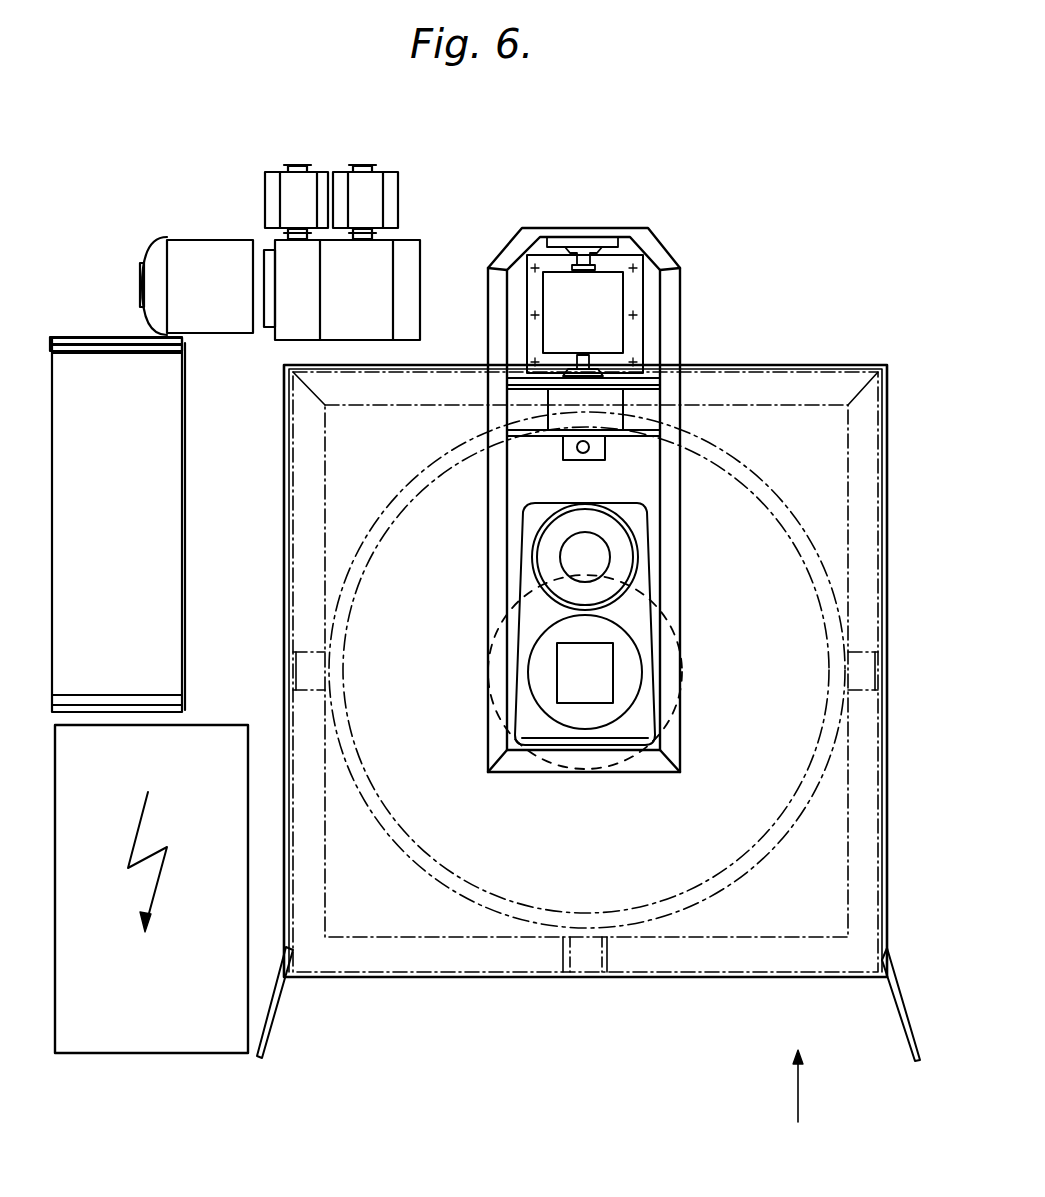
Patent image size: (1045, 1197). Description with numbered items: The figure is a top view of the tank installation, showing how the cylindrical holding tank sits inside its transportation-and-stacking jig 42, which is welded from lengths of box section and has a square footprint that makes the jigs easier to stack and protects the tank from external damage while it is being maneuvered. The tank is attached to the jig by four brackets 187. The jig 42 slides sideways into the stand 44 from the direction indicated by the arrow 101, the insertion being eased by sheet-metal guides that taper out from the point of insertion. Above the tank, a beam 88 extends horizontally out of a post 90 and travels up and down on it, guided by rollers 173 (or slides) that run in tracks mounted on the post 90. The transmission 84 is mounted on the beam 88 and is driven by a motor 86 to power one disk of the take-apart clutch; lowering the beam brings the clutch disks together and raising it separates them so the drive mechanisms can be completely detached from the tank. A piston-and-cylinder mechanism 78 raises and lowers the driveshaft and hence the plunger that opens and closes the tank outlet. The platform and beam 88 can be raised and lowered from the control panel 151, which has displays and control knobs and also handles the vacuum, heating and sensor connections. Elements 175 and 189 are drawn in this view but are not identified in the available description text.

The transportation-and-stacking jig 42 is at (706, 962).
The stand 44 is at (893, 1013).
The piston-and-cylinder mechanism 78 is at (595, 688).
The transmission 84 is at (630, 608).
The motor 86 is at (598, 555).
The beam 88 is at (688, 732).
The post 90 is at (633, 328).
The arrow 101 is at (367, 982).
The control panel 151 is at (138, 1020).
The roller 173 is at (584, 250).
The lower coupling 175 is at (600, 372).
The bracket 187 is at (589, 962).
The support leg 189 is at (270, 1035).